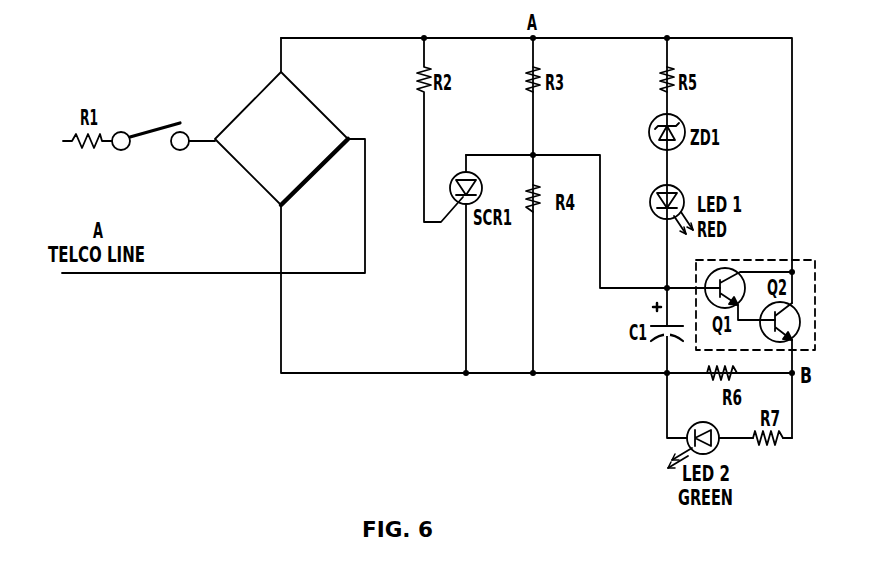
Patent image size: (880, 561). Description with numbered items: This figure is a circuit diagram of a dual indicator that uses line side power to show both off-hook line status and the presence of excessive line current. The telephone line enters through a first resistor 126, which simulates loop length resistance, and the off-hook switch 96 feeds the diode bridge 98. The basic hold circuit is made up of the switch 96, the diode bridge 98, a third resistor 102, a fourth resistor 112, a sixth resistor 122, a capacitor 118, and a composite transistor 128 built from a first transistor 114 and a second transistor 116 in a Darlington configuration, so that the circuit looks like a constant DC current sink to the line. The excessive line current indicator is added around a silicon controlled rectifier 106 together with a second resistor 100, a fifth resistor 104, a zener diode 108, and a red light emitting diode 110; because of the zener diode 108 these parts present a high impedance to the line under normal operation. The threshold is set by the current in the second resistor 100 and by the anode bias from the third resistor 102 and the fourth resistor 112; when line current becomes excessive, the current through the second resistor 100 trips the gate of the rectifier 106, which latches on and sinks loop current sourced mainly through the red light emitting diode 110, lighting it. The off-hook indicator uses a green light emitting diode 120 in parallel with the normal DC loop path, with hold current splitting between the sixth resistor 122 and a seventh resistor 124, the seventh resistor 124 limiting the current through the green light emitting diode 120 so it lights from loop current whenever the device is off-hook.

The off-hook switch 96 is at (179, 150).
The diode bridge 98 is at (309, 98).
The resistor R2 100 is at (416, 83).
The resistor R3 102 is at (526, 82).
The resistor R5 104 is at (659, 82).
The silicon controlled rectifier 106 is at (452, 180).
The zener diode ZD1 108 is at (651, 128).
The red LED1 110 is at (652, 195).
The resistor R4 112 is at (527, 186).
The transistor Q1 114 is at (723, 268).
The transistor Q2 116 is at (801, 322).
The capacitor 118 is at (655, 324).
The green LED2 120 is at (690, 431).
The resistor R6 122 is at (714, 376).
The resistor R7 124 is at (778, 443).
The resistor R1 126 is at (79, 133).
The transistor 128 is at (805, 259).